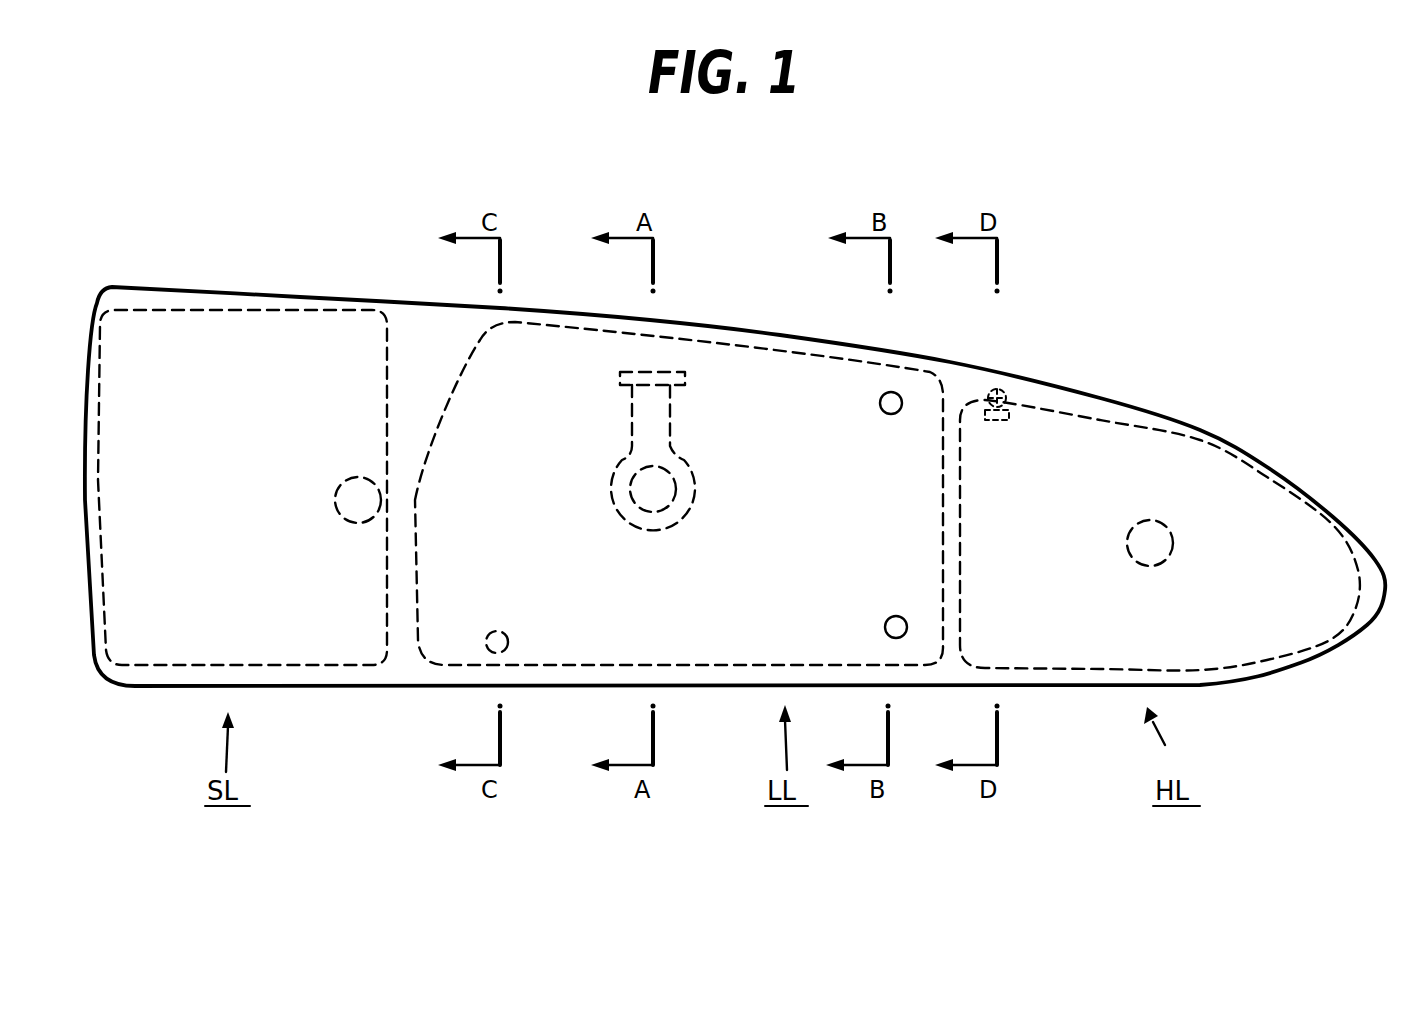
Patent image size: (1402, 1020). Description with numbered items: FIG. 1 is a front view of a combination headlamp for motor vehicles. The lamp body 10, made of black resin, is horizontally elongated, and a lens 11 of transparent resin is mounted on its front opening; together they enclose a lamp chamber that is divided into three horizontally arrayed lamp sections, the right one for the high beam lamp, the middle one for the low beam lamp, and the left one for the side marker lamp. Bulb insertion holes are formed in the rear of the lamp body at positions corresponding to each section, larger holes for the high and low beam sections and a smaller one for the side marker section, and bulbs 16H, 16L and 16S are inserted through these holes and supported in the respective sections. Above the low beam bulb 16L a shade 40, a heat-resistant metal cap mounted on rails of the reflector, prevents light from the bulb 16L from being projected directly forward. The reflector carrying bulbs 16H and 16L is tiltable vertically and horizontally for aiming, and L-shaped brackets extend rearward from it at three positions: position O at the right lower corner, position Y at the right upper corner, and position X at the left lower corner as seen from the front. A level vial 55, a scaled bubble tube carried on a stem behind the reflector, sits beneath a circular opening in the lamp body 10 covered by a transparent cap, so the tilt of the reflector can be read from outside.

The lamp body 10 is at (1132, 402).
The lens 11 is at (1252, 462).
The bulb 16S is at (358, 483).
The bulb 16L is at (662, 497).
The bulb 16H is at (1165, 538).
The shade 40 is at (672, 430).
The level vial 55 is at (995, 393).
The position X is at (488, 650).
The position Y is at (893, 395).
The position O is at (900, 638).